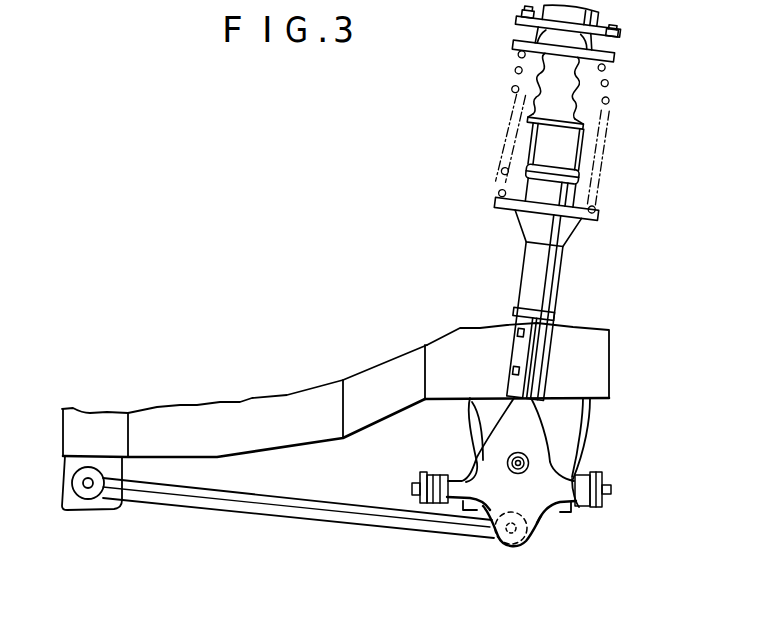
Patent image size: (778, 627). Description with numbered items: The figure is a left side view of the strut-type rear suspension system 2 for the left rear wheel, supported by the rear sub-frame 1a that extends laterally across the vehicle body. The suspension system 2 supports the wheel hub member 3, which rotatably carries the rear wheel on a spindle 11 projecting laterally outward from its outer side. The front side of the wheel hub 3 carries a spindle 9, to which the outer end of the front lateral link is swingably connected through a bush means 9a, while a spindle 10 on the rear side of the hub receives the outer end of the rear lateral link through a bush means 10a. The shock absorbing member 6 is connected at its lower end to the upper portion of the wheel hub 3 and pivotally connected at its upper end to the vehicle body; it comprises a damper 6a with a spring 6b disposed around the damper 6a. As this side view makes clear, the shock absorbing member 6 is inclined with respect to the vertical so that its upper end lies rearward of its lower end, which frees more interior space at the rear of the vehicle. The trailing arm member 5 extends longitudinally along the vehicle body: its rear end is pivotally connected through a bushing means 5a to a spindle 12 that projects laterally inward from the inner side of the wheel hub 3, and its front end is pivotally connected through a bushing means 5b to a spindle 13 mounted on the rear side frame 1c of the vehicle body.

The rear sub-frame 1a is at (560, 418).
The rear side frame 1c is at (236, 416).
The rear suspension system 2 is at (350, 254).
The wheel hub member 3 is at (552, 463).
The trailing arm member 5 is at (305, 512).
The bushing means 5a is at (543, 526).
The bushing means 5b is at (74, 508).
The shock absorbing member 6 is at (572, 202).
The damper 6a is at (535, 305).
The spring 6b is at (627, 216).
The spindle 9 is at (412, 490).
The bush means 9a is at (440, 479).
The spindle 10 is at (611, 490).
The bush means 10a is at (584, 507).
The spindle 11 is at (522, 472).
The spindle 12 is at (494, 551).
The spindle 13 is at (90, 490).